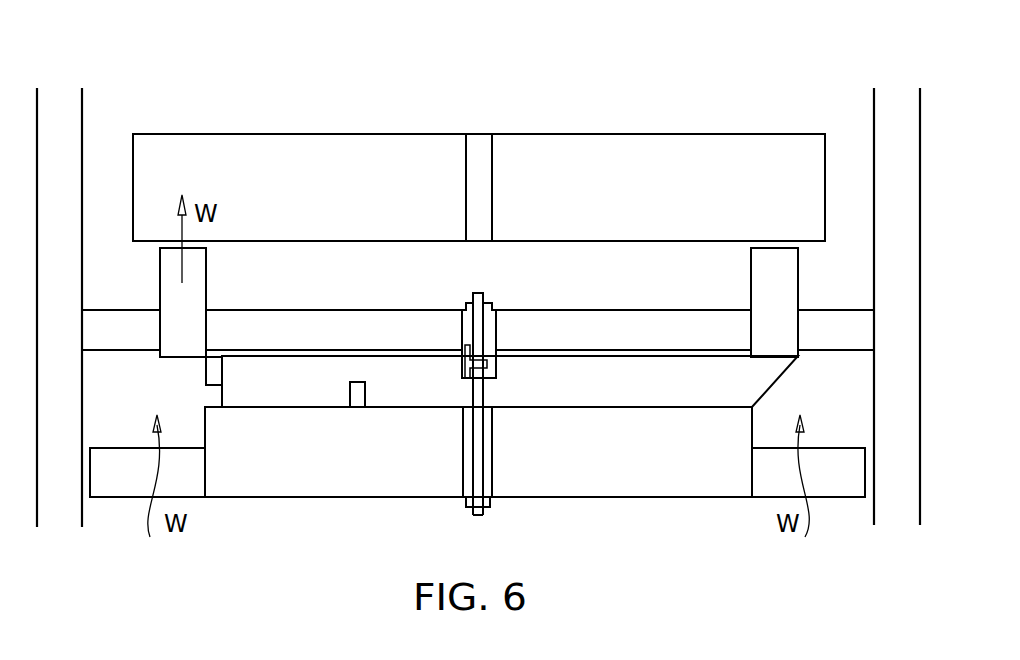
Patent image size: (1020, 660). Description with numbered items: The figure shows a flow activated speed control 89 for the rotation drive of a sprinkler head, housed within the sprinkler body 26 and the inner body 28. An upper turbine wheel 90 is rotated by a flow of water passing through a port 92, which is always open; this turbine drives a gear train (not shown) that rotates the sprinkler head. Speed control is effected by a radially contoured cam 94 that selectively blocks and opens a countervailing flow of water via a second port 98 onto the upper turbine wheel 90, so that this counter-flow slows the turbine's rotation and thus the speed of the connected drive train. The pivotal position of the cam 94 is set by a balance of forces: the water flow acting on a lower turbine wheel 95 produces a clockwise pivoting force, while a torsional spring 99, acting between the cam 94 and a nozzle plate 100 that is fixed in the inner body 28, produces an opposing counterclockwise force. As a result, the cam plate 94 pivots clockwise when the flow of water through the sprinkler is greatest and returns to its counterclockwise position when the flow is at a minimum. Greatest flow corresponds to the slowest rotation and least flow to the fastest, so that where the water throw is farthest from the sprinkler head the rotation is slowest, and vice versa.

The outer housing wall 26 is at (62, 102).
The inner body 28 is at (85, 110).
The valve assembly 89 is at (283, 545).
The upper turbine wheel 90 is at (640, 202).
The port 92 is at (213, 282).
The radially contoured cam 94 is at (606, 403).
The lower turbine wheel 95 is at (365, 478).
The port 98 is at (765, 275).
The torsional spring 99 is at (460, 368).
The nozzle plate 100 is at (597, 323).